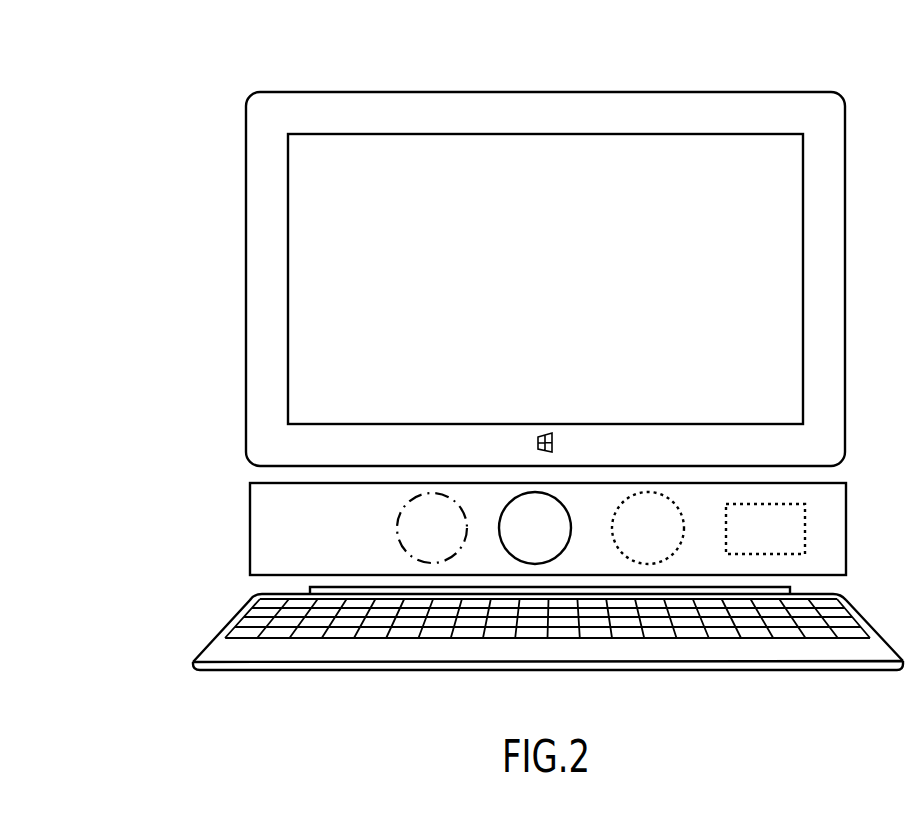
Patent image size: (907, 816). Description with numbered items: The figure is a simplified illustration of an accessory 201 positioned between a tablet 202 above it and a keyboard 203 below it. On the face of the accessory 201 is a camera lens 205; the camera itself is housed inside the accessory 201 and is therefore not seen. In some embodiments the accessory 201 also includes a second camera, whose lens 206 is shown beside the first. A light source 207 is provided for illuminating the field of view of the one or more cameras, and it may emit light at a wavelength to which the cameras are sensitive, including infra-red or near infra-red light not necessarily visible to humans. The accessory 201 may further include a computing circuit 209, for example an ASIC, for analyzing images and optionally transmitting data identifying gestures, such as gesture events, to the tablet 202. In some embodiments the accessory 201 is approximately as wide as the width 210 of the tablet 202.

The width 210 is at (830, 52).
The tablet 202 is at (238, 288).
The accessory 201 is at (248, 521).
The keyboard 203 is at (208, 630).
The camera lens 205 is at (535, 528).
The lens 206 is at (648, 528).
The light source 207 is at (432, 528).
The computing circuit 209 is at (765, 529).